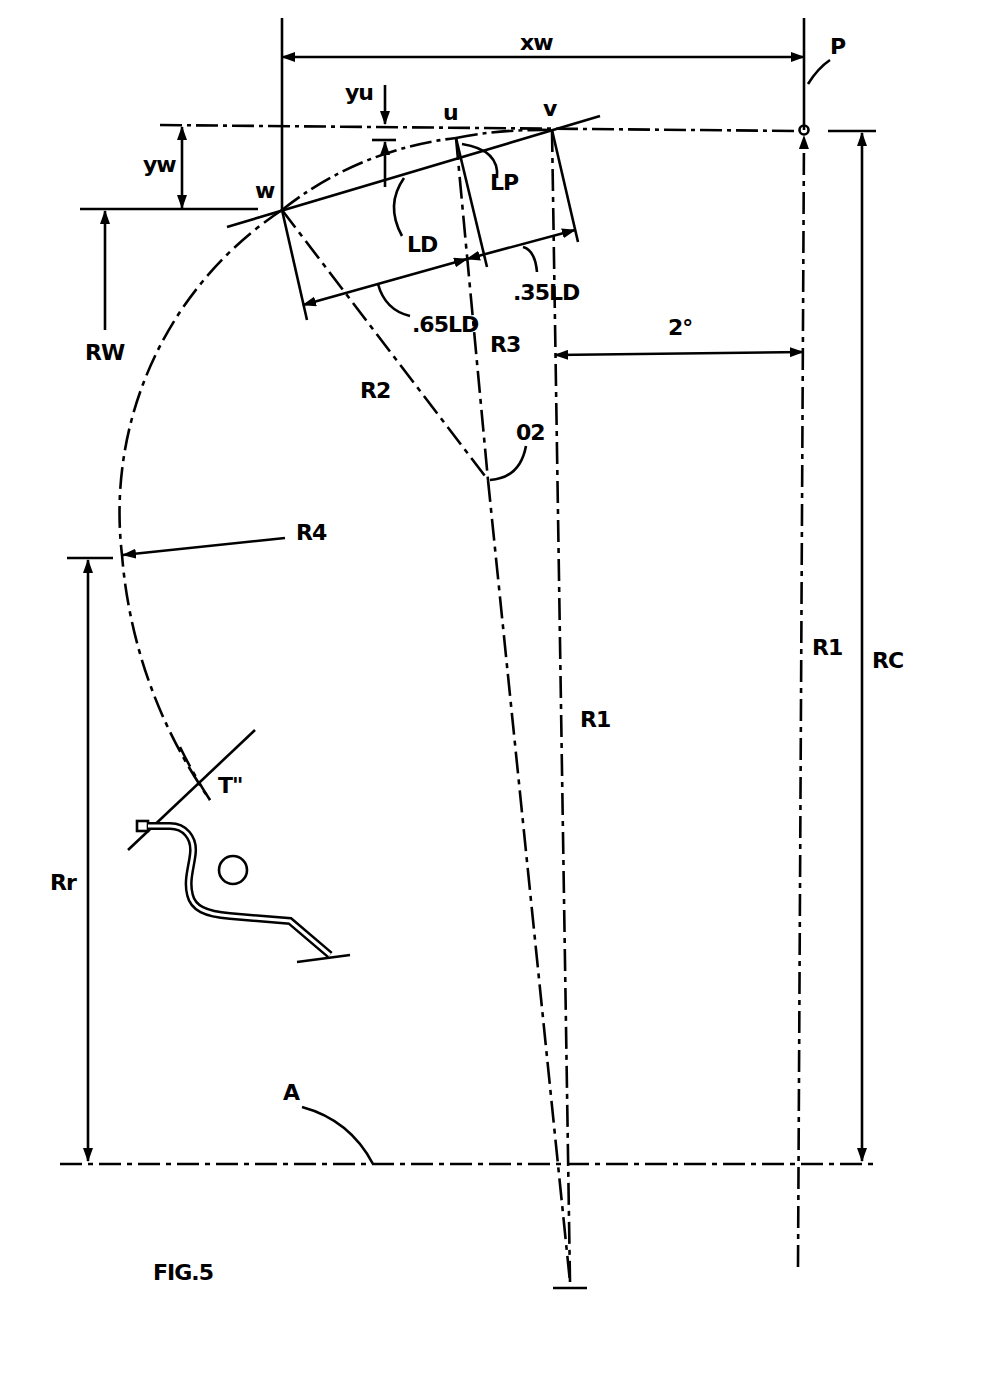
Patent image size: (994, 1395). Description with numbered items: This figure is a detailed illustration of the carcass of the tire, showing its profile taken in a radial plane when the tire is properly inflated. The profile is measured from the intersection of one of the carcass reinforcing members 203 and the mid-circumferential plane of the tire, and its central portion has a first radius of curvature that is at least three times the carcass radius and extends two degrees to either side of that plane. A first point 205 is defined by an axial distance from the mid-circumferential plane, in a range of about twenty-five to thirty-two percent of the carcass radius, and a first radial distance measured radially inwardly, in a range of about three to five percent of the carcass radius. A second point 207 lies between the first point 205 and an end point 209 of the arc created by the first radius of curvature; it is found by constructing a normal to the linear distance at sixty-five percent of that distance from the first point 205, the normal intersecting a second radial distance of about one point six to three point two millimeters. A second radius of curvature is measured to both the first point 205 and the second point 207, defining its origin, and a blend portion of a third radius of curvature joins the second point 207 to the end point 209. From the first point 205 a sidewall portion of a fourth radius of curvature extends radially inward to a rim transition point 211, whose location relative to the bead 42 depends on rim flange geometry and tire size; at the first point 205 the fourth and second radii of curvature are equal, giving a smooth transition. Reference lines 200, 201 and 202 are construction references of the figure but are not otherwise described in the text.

The reference point P on center axis 200 is at (808, 125).
The vertical reference line through point w 201 is at (283, 37).
The horizontal reference line at point w 202 is at (123, 208).
The carcass reinforcing member 203 is at (672, 131).
The first point 205 is at (284, 208).
The second point 207 is at (457, 133).
The end point 209 is at (553, 128).
The rim transition point 211 is at (210, 773).
The bead 42 is at (236, 866).